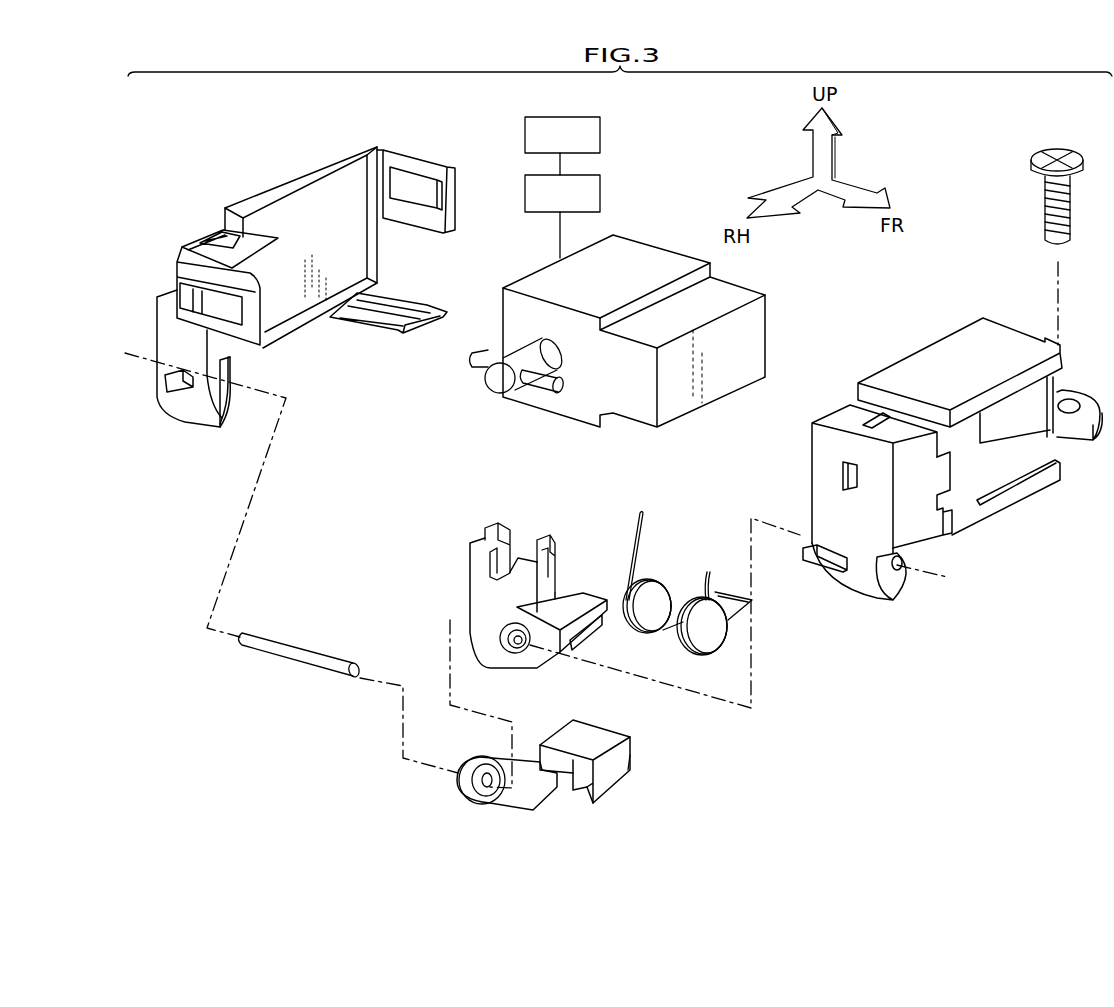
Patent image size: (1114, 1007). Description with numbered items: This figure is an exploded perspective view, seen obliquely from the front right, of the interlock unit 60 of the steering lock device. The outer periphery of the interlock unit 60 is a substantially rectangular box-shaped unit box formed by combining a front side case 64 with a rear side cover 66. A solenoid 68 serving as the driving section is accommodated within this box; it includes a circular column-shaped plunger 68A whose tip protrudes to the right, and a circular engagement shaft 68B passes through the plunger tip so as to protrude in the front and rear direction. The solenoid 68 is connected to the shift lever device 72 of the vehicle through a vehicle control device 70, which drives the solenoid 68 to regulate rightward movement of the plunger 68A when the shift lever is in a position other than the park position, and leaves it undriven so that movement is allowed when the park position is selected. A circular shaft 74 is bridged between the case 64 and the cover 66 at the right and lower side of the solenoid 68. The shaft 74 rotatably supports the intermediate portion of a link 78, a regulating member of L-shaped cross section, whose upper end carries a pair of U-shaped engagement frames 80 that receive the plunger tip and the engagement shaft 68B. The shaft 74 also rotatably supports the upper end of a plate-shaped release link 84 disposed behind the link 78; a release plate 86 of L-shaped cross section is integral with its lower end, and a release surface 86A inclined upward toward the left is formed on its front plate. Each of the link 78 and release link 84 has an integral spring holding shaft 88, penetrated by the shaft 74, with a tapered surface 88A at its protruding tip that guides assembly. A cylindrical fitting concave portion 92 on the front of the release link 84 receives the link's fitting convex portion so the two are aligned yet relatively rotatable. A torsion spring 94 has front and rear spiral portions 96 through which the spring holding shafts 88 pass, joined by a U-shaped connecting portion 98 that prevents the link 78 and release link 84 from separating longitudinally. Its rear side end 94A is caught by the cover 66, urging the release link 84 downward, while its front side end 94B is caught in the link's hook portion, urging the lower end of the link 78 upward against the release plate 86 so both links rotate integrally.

The interlock unit 60 is at (946, 226).
The case 64 is at (937, 355).
The cover 66 is at (305, 172).
The solenoid 68 is at (655, 247).
The plunger 68A is at (494, 390).
The engagement shaft 68B is at (475, 360).
The control device 70 is at (600, 190).
The shift lever device 72 is at (600, 132).
The shaft 74 is at (300, 648).
The link 78 is at (585, 586).
The engagement frames 80 is at (500, 522).
The release link 84 is at (552, 806).
The release plate 86 is at (592, 730).
The release surface 86A is at (630, 775).
The spring holding shaft 88 is at (530, 647).
The tapered surface 88A is at (514, 647).
The fitting concave portion 92 is at (487, 790).
The torsion spring 94 is at (660, 575).
The rear side end 94A is at (645, 520).
The front side end 94B is at (705, 570).
The spiral portions 96 is at (648, 582).
The connecting portion 98 is at (733, 592).